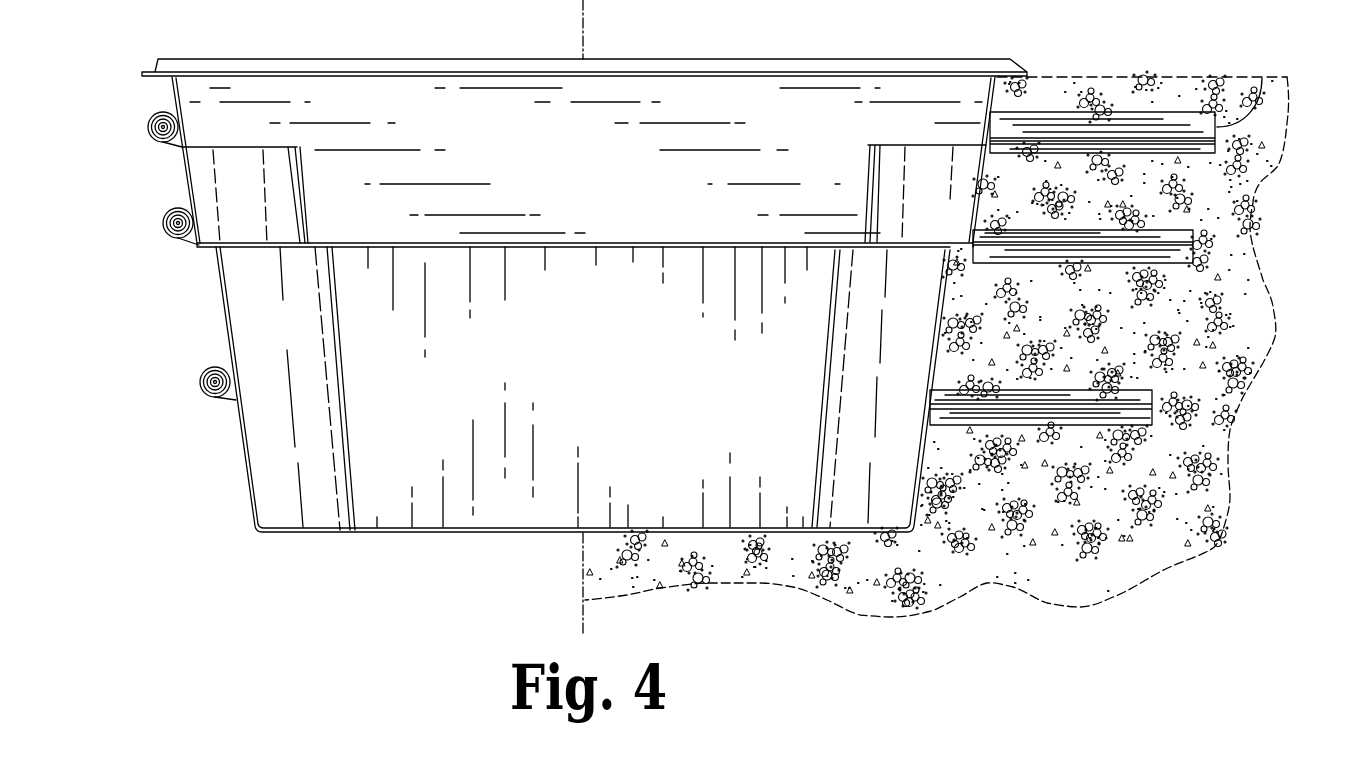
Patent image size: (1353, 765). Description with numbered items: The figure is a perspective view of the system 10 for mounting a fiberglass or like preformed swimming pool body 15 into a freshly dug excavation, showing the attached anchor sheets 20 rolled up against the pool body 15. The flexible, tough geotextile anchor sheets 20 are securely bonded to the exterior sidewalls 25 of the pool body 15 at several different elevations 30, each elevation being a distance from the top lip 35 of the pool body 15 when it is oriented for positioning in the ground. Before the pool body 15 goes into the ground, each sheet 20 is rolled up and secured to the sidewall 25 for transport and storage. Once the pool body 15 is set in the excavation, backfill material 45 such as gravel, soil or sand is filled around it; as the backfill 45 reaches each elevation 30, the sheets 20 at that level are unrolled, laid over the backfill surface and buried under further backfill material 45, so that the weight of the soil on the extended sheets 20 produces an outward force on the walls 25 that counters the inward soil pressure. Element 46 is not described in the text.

The system 10 is at (247, 643).
The preformed swimming pool body 15 is at (430, 110).
The anchor sheet 20 is at (1261, 78).
The exterior sidewall 25 is at (923, 463).
The elevation 30 is at (148, 127).
The top lip 35 is at (1013, 67).
The backfill material 45 is at (1210, 203).
The ground surface 46 is at (1128, 77).